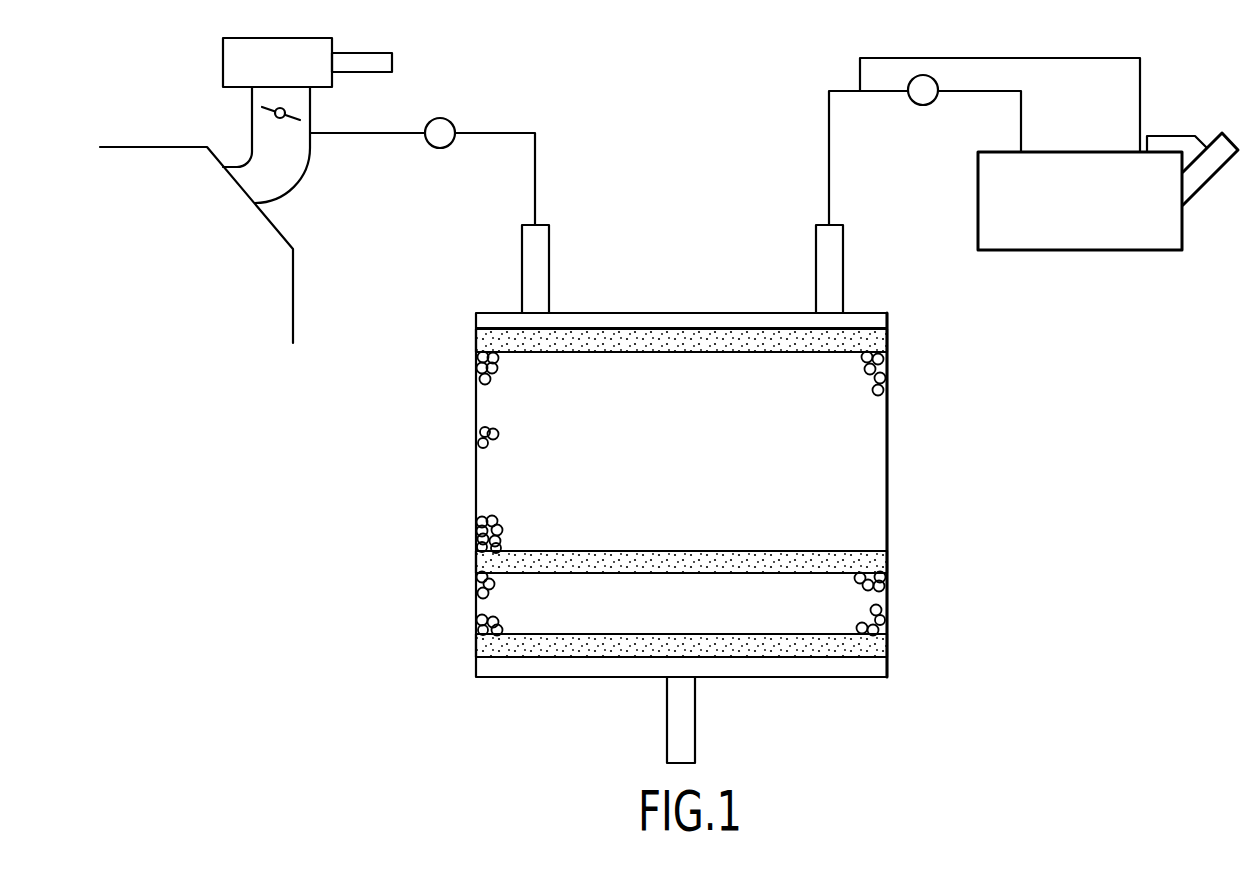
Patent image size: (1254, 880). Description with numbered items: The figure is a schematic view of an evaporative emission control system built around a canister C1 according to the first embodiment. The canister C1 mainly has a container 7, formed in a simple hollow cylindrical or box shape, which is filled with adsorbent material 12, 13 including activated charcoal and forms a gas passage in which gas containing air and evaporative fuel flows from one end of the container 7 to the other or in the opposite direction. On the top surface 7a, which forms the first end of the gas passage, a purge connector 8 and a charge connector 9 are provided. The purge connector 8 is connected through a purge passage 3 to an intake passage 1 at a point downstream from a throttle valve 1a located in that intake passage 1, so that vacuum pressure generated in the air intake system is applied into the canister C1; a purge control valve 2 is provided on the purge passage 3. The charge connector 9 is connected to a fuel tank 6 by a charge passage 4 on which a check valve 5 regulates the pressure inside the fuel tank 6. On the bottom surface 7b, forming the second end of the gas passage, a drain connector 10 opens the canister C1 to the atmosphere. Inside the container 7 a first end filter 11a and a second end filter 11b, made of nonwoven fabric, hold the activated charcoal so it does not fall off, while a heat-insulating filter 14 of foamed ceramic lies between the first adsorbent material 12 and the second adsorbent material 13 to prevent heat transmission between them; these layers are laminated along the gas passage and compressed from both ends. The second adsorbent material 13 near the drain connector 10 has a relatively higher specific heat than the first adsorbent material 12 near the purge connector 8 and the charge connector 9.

The intake passage 1 is at (258, 96).
The throttle valve 1a is at (297, 118).
The purge control valve 2 is at (438, 118).
The purge passage 3 is at (535, 188).
The charge passage 4 is at (829, 138).
The check valve 5 is at (930, 105).
The fuel tank 6 is at (1132, 252).
The container 7 is at (633, 496).
The top surface 7a is at (655, 312).
The bottom surface 7b is at (755, 677).
The purge connector 8 is at (522, 273).
The charge connector 9 is at (816, 262).
The drain connector 10 is at (667, 728).
The first end filter 11a is at (862, 350).
The second end filter 11b is at (847, 650).
The first adsorbent material 12 is at (478, 433).
The second adsorbent material 13 is at (478, 592).
The heat-insulating filter 14 is at (478, 558).
The canister C1 is at (442, 472).